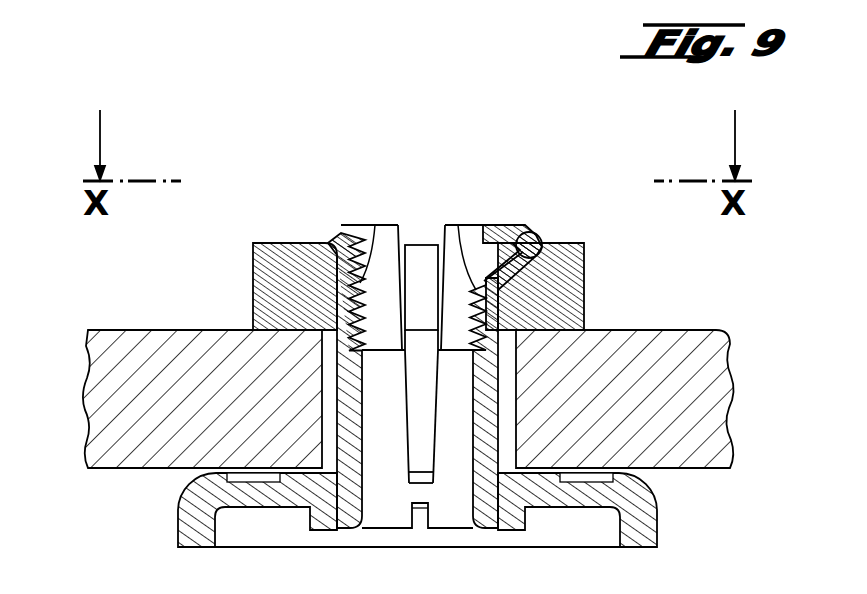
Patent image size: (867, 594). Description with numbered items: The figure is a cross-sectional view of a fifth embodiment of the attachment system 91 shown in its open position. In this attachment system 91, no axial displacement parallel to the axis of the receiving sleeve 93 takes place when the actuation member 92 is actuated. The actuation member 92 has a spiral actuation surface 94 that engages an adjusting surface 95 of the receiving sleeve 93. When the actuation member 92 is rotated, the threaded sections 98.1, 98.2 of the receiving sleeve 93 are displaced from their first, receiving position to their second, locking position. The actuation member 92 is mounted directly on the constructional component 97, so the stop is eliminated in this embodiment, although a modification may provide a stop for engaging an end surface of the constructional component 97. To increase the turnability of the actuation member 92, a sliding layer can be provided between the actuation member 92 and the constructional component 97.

The attachment system 91 is at (296, 141).
The actuation member 92 is at (273, 236).
The receiving sleeve 93 is at (508, 214).
The spiral actuation surface 94 is at (526, 277).
The adjusting surface 95 is at (533, 232).
The constructional component 97 is at (170, 357).
The threaded section 98.1 is at (375, 227).
The threaded section 98.2 is at (457, 227).